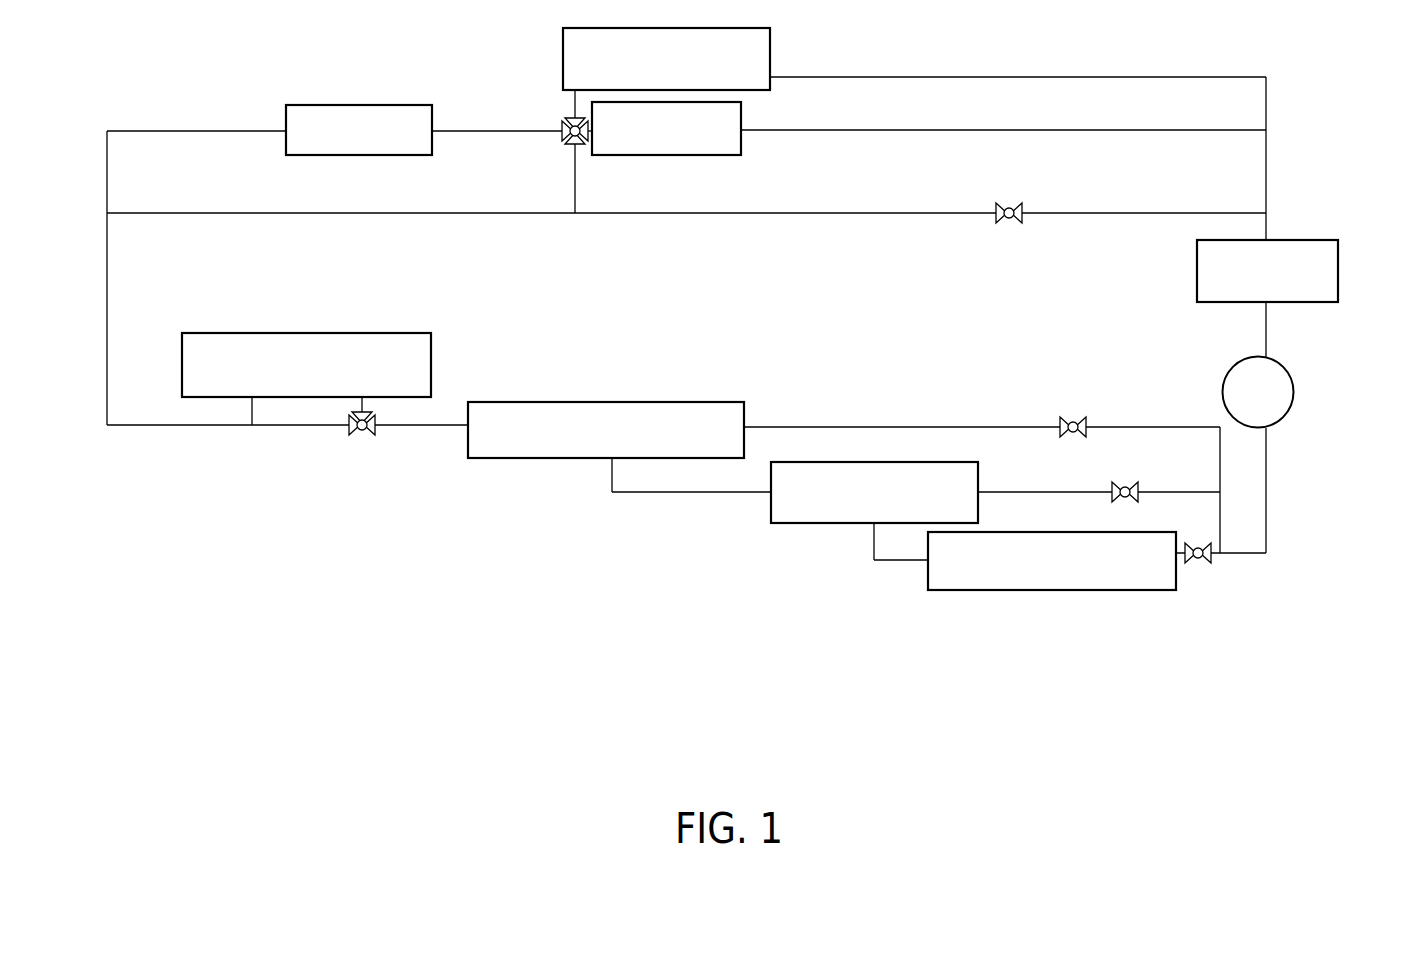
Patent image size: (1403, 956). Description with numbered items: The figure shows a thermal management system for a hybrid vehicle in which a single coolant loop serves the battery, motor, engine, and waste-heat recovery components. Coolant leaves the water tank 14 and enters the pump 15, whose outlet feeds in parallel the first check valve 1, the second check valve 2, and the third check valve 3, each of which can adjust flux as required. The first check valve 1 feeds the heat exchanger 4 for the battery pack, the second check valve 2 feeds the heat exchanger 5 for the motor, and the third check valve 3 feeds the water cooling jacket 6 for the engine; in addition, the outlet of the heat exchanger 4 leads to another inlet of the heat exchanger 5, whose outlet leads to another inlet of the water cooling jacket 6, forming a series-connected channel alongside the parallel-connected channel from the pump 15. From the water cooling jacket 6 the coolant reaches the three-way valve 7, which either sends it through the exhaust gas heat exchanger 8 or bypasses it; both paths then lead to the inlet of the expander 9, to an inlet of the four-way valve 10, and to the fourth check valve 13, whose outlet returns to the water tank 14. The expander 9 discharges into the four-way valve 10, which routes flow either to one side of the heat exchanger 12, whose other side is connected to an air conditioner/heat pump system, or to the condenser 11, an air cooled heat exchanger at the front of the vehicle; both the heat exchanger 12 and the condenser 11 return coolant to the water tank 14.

The first check valve 1 is at (1208, 560).
The second check valve 2 is at (1135, 498).
The third check valve 3 is at (1085, 432).
The heat exchanger for a battery pack 4 is at (1143, 590).
The heat exchanger for a motor 5 is at (790, 528).
The water cooling jacket for an engine 6 is at (650, 458).
The three-way valve 7 is at (372, 432).
The exhaust gas heat exchanger 8 is at (432, 340).
The expander 9 is at (362, 156).
The four-way valve 10 is at (566, 139).
The condenser 11 is at (744, 156).
The heat exchanger 12 is at (770, 90).
The fourth check valve 13 is at (1020, 220).
The water tank 14 is at (1330, 303).
The pump 15 is at (1278, 425).